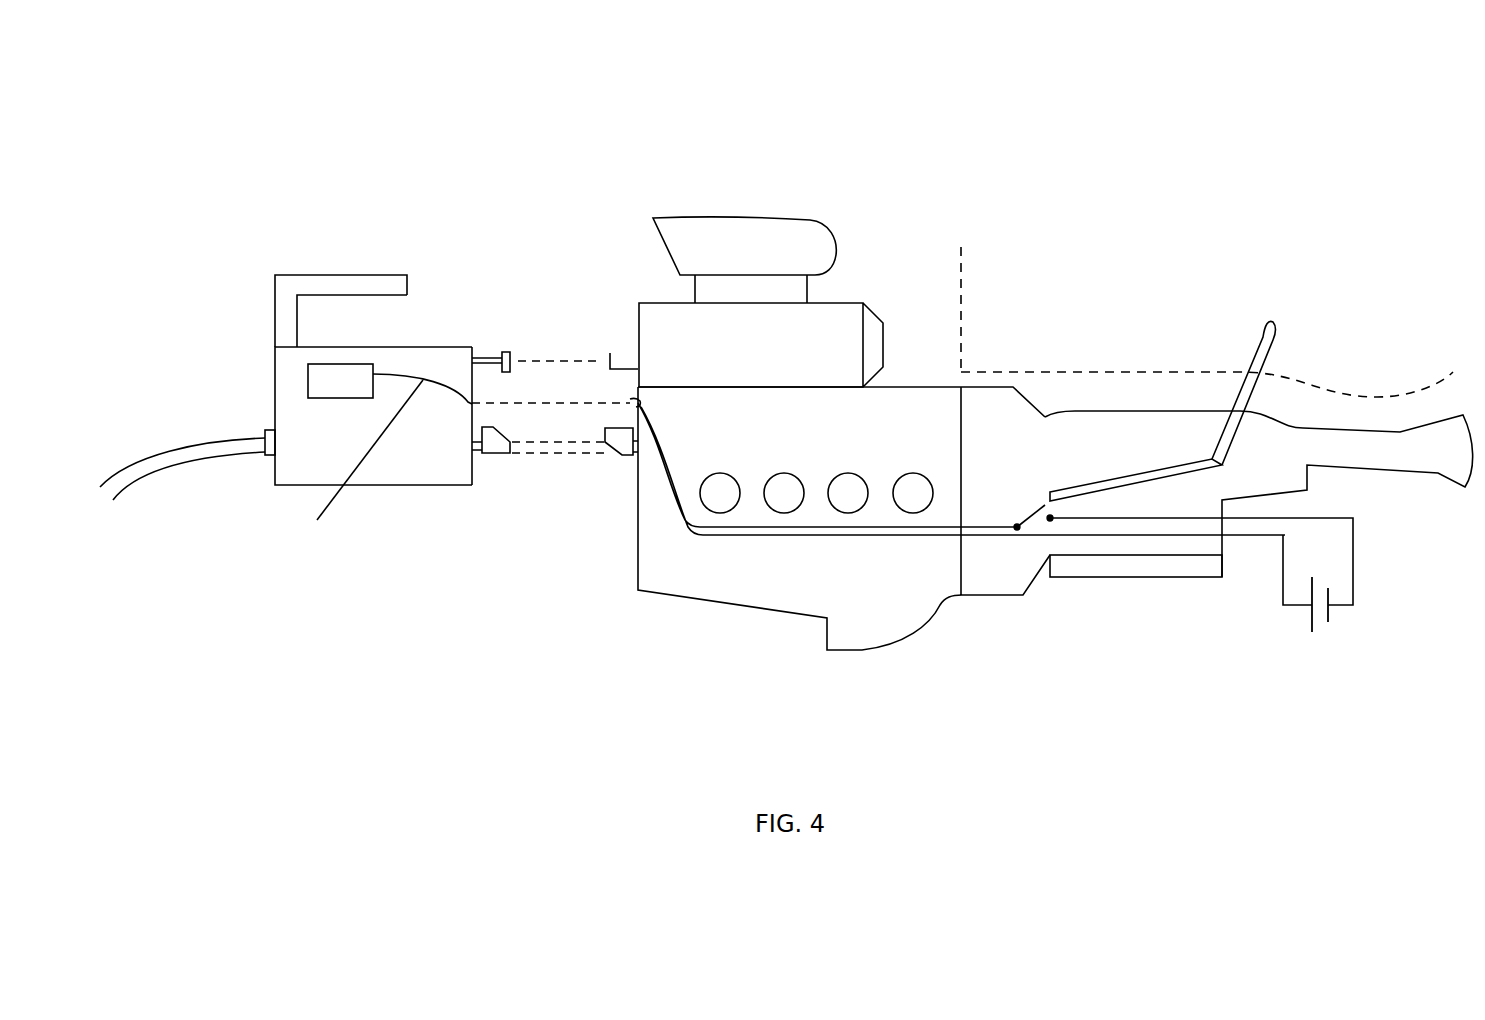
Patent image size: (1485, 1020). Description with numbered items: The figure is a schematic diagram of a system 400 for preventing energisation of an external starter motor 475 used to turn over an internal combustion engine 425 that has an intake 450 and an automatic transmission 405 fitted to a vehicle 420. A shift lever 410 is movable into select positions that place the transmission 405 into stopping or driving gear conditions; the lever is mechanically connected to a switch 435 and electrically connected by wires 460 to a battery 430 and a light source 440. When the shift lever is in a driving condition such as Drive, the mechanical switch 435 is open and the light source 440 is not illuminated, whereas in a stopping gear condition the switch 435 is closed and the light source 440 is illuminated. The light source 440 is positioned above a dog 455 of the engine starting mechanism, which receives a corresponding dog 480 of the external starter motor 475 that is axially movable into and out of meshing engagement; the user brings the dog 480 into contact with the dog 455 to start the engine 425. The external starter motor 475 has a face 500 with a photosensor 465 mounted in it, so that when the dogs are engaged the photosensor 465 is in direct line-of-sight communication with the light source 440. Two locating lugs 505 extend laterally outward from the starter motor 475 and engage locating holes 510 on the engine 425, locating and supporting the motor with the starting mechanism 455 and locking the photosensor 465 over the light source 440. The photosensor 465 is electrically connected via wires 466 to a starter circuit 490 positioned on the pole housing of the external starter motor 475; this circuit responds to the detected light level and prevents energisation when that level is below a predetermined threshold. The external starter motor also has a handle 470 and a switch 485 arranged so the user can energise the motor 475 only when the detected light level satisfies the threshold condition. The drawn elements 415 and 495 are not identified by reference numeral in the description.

The system 400 is at (830, 133).
The automatic transmission 405 is at (1450, 460).
The shift lever 410 is at (1258, 358).
The trigger 415 is at (1042, 465).
The vehicle 420 is at (963, 268).
The internal combustion engine 425 is at (883, 610).
The battery 430 is at (1337, 617).
The switch 435 is at (1072, 527).
The light source 440 is at (630, 399).
The intake 450 is at (722, 225).
The dog 455 is at (625, 456).
The wires 460 is at (1353, 553).
The photosensor 465 is at (467, 407).
The wires 466 is at (354, 466).
The handle 470 is at (347, 282).
The external starter motor 475 is at (378, 477).
The dog 480 is at (493, 447).
The switch 485 is at (338, 312).
The starter circuit 490 is at (333, 398).
The power cable 495 is at (127, 472).
The face 500 is at (453, 487).
The locating lugs 505 is at (504, 352).
The locating holes 510 is at (625, 358).